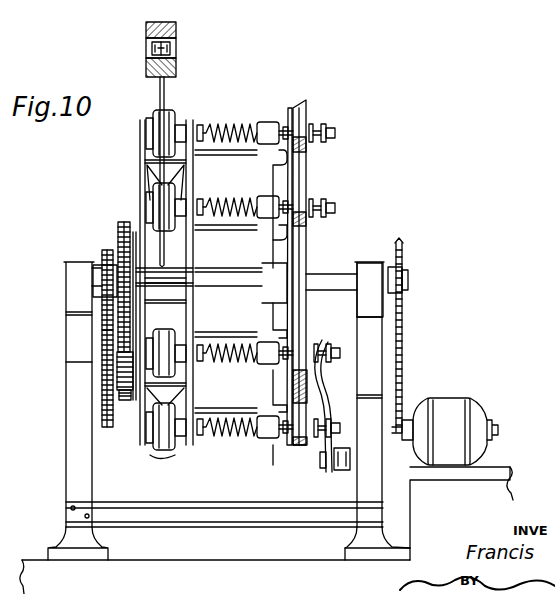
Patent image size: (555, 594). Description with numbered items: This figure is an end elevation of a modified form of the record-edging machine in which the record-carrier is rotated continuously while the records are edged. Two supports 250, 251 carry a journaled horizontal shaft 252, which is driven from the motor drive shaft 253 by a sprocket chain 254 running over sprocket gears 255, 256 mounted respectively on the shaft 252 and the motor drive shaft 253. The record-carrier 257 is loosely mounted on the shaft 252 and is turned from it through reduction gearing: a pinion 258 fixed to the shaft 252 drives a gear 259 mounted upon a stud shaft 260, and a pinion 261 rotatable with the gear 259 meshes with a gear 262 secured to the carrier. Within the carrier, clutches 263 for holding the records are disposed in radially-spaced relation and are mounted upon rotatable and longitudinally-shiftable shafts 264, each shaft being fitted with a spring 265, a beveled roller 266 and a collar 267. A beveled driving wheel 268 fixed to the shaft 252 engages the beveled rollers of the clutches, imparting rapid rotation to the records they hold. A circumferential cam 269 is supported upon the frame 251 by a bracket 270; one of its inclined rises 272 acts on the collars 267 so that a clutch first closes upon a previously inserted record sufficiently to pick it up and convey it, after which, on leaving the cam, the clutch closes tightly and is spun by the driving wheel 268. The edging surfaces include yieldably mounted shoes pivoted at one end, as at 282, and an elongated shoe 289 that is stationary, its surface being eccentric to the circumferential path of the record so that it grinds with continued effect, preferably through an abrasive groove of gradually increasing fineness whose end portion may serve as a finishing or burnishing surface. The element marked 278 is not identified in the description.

The support 250 is at (72, 402).
The support 251 is at (372, 387).
The horizontal shaft 252 is at (66, 278).
The motor drive shaft 253 is at (400, 425).
The sprocket chain 254 is at (402, 347).
The sprocket gear 255 is at (398, 246).
The sprocket gear 256 is at (398, 442).
The record-carrier 257 is at (230, 165).
The pinion 258 is at (108, 249).
The gear 259 is at (102, 336).
The stud shaft 260 is at (125, 372).
The pinion 261 is at (125, 400).
The gear 262 is at (125, 220).
The clutch 263 is at (168, 121).
The shaft 264 is at (287, 128).
The spring 265 is at (220, 128).
The beveled roller 266 is at (303, 124).
The collar 267 is at (336, 133).
The beveled driving wheel 268 is at (298, 244).
The circumferential cam 269 is at (323, 457).
The bracket 270 is at (342, 463).
The inclined rise 272 is at (316, 352).
The upper block 278 is at (178, 31).
The pivot 282 is at (177, 47).
The elongated shoe 289 is at (177, 66).